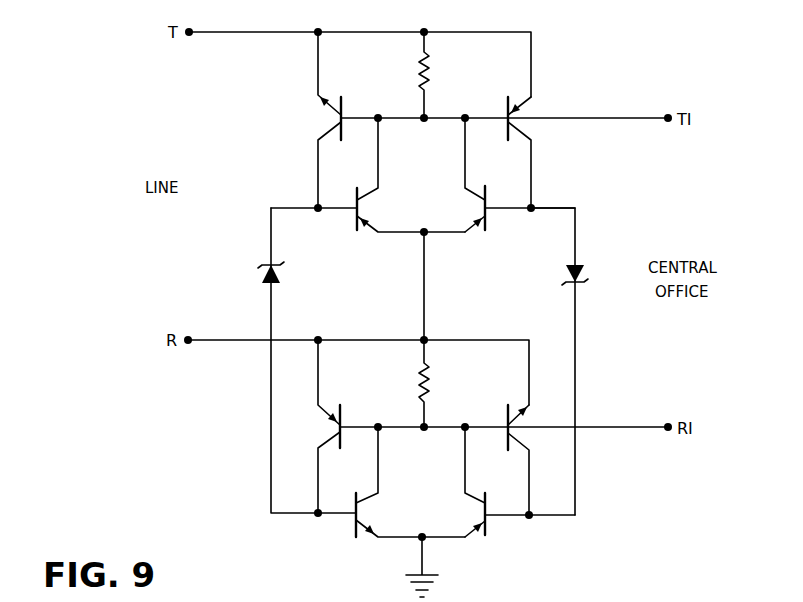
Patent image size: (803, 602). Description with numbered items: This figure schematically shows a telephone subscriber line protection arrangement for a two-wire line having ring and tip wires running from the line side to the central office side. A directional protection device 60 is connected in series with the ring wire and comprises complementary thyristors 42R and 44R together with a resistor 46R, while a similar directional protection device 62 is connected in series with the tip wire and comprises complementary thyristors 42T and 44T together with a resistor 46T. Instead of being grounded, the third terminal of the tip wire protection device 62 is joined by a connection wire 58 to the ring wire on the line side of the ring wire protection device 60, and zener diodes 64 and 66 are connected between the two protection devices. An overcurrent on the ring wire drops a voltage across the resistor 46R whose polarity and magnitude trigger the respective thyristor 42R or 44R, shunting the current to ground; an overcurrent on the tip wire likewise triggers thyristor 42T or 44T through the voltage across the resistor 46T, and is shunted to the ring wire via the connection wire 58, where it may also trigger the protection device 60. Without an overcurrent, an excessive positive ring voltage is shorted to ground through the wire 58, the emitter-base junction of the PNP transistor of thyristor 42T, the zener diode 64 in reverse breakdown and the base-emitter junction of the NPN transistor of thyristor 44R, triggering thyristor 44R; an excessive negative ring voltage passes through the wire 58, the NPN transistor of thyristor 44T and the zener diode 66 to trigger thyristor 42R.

The thyristor 42T is at (362, 171).
The thyristor 44T is at (516, 171).
The resistor 46T is at (430, 60).
The thyristor 42R is at (513, 481).
The thyristor 44R is at (365, 481).
The resistor 46R is at (430, 374).
The connection wire 58 is at (426, 308).
The directional protection device 60 is at (260, 471).
The directional protection device 62 is at (570, 86).
The zener diode 64 is at (260, 278).
The zener diode 66 is at (568, 268).